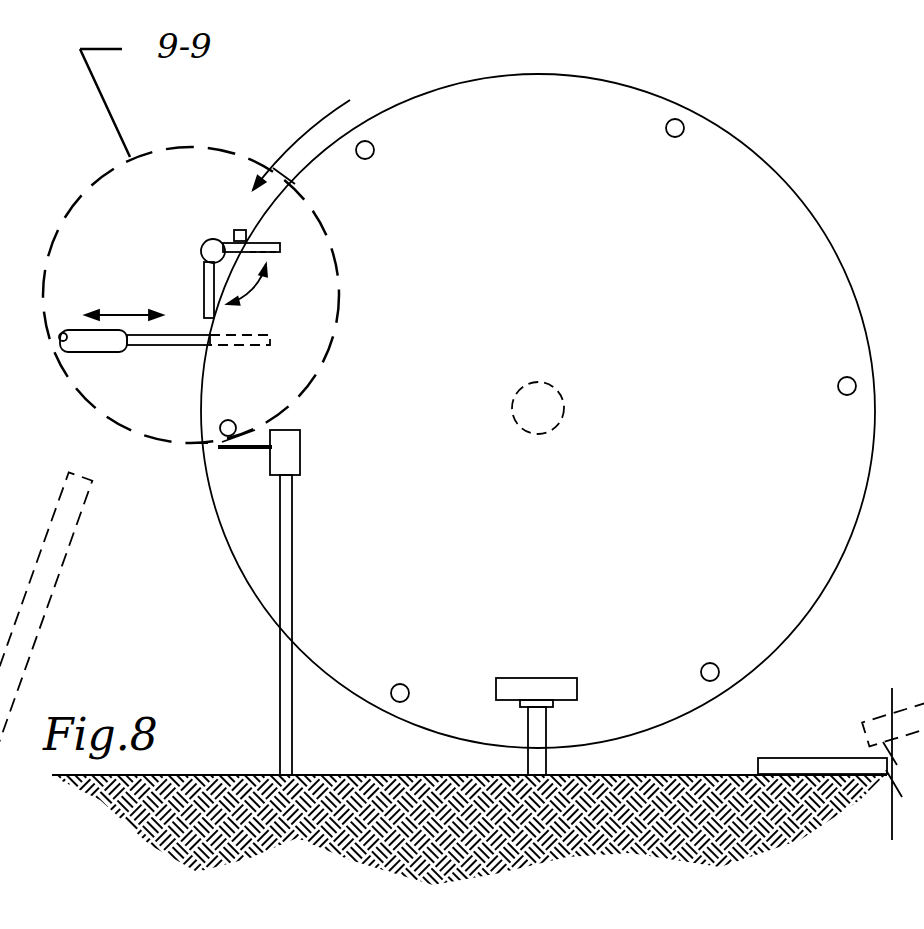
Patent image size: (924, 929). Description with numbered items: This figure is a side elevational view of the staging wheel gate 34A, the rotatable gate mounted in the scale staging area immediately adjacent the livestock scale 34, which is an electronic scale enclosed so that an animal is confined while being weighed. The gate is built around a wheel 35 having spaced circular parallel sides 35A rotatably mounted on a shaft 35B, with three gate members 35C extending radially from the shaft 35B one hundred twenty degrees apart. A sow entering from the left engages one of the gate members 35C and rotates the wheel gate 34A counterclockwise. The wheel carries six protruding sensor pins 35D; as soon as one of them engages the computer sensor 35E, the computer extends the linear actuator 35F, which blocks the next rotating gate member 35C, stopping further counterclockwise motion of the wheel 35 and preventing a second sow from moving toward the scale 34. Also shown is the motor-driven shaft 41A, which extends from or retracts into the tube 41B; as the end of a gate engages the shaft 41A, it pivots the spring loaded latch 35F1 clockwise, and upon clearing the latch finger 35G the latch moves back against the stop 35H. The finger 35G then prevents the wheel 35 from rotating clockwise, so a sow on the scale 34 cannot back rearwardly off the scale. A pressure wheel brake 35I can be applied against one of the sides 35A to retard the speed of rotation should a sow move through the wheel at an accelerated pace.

The livestock scale 34 is at (857, 760).
The staging wheel gate 34A is at (438, 68).
The wheel 35 is at (528, 452).
The circular parallel sides 35A is at (515, 558).
The shaft 35B is at (548, 398).
The gate members 35C is at (594, 236).
The sensor pins 35D is at (407, 702).
The computer sensor 35E is at (220, 447).
The linear actuator 35F is at (118, 308).
The spring loaded latch 35F1 is at (204, 247).
The latch finger 35G is at (268, 242).
The stop 35H is at (238, 232).
The pressure wheel brake 35I is at (540, 717).
The shaft 41A is at (190, 342).
The tube 41B is at (92, 350).